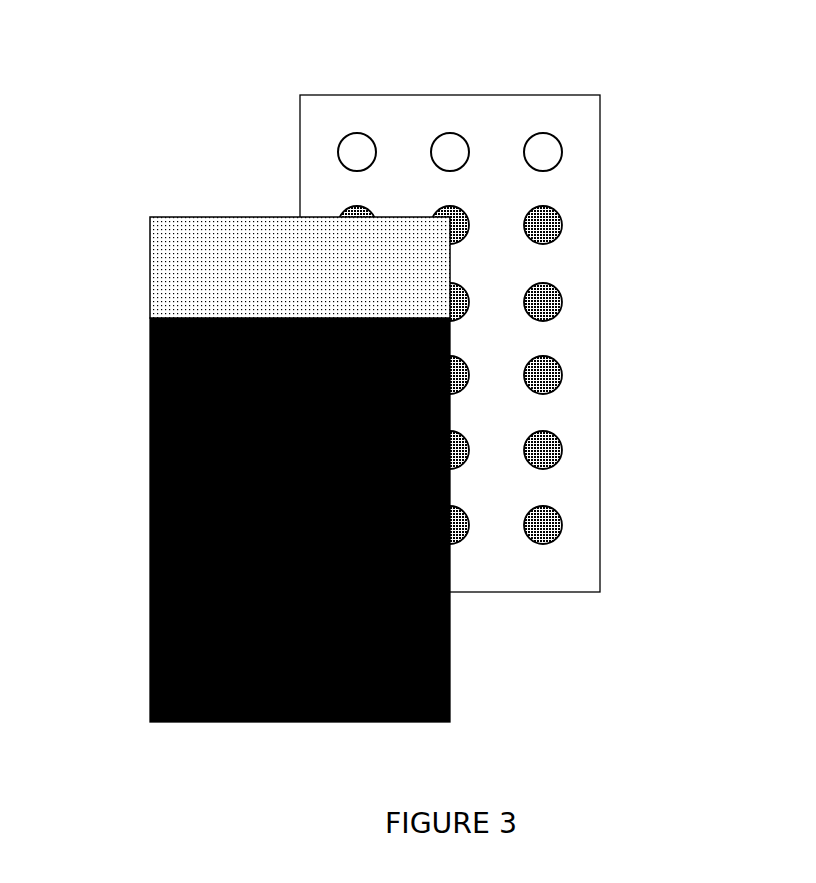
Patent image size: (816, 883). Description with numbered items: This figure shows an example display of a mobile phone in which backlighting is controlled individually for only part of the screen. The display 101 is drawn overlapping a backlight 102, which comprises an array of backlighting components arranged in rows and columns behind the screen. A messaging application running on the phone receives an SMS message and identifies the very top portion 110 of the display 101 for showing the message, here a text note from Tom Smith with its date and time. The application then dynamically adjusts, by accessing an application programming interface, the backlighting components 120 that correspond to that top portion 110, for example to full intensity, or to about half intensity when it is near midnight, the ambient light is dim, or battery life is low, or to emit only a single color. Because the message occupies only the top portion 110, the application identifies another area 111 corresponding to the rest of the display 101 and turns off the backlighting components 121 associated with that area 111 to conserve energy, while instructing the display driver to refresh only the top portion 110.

The display 101 is at (247, 440).
The backlight 102 is at (450, 311).
The very top portion 110 is at (140, 218).
The area 111 is at (138, 323).
The backlighting components 120 is at (618, 112).
The backlighting components 121 is at (618, 196).